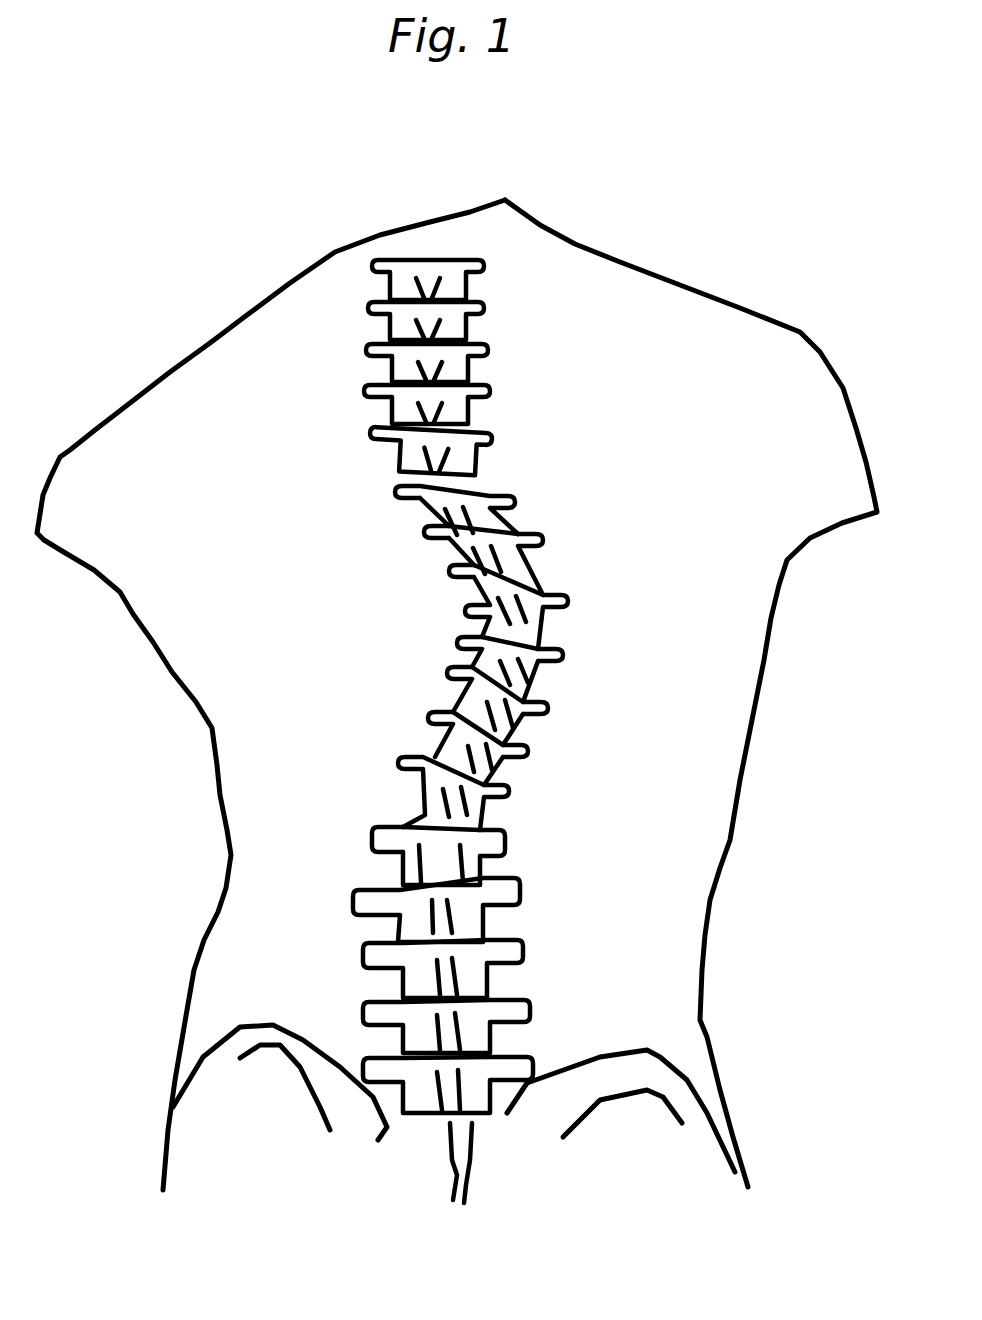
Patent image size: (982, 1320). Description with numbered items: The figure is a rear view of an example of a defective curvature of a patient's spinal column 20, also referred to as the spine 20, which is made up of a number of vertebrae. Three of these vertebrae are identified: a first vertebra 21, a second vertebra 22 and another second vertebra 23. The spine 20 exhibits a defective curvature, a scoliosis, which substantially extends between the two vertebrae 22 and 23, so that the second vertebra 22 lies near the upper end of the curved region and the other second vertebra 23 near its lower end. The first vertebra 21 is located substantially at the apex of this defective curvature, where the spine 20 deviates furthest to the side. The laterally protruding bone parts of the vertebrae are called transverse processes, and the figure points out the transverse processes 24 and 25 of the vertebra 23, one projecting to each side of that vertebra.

The spinal column 20 is at (298, 363).
The first vertebra 21 is at (603, 619).
The second vertebra 22 is at (526, 446).
The another second vertebra 23 is at (540, 850).
The transverse process 24 is at (506, 844).
The transverse process 25 is at (386, 840).